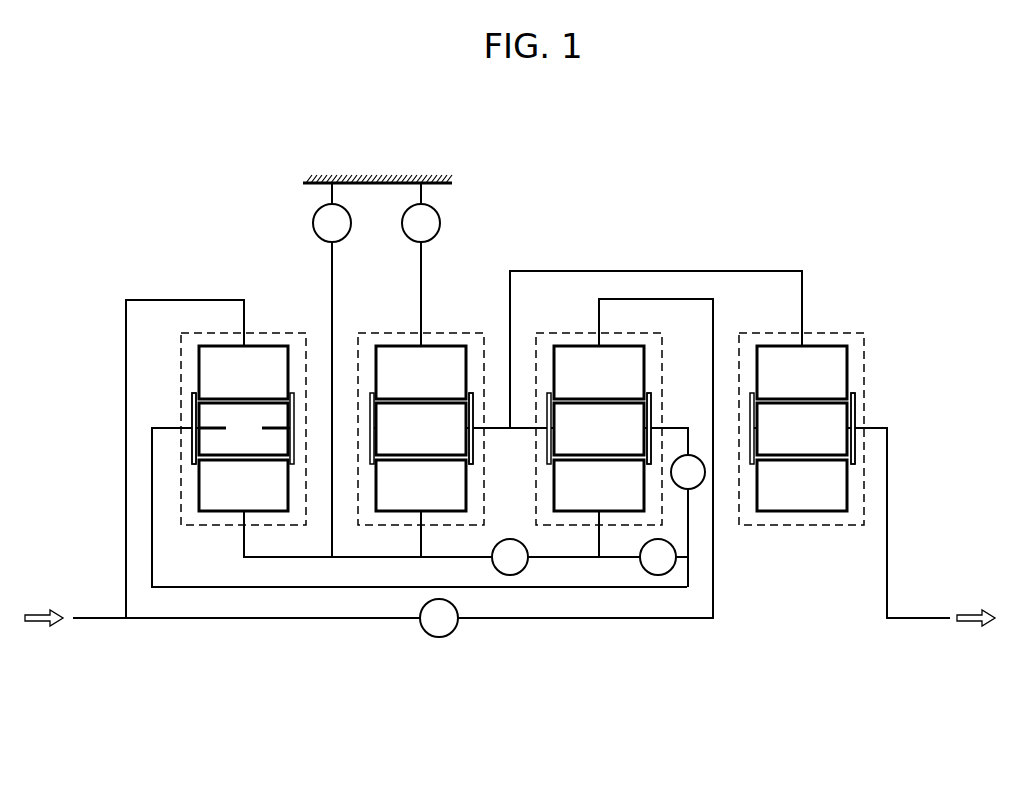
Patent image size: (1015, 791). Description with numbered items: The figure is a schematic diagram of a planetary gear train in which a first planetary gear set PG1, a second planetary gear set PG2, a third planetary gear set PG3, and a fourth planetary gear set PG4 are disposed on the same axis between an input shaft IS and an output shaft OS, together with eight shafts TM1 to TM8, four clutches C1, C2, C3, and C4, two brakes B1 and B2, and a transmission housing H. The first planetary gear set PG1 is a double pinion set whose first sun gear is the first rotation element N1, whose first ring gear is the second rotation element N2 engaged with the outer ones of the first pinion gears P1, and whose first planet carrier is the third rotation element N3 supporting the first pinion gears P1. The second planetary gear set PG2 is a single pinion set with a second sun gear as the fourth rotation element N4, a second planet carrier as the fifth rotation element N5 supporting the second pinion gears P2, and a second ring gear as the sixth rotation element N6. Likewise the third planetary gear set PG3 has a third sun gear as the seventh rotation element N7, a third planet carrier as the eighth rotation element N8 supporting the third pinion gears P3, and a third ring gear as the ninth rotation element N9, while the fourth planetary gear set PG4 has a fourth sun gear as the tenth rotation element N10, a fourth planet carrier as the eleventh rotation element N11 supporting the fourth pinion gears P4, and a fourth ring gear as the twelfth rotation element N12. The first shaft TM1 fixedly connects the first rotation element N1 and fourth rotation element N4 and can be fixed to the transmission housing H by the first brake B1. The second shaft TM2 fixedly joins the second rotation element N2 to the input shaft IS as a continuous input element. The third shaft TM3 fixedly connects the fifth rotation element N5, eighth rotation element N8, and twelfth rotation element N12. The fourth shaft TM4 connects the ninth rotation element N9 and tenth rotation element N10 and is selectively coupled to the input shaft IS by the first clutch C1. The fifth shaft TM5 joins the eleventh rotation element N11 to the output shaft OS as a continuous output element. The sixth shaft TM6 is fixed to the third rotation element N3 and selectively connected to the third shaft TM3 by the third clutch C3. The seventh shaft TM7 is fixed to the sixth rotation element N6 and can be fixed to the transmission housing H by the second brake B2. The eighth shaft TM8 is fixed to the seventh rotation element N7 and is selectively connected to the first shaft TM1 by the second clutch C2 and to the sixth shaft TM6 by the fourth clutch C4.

The transmission housing H is at (388, 175).
The first brake B1 is at (332, 223).
The second brake B2 is at (421, 223).
The first clutch C1 is at (439, 618).
The second clutch C2 is at (510, 557).
The third clutch C3 is at (678, 507).
The fourth clutch C4 is at (658, 557).
The input shaft IS is at (100, 620).
The output shaft OS is at (908, 620).
The first shaft TM1 is at (332, 267).
The second shaft TM2 is at (126, 407).
The third shaft TM3 is at (575, 271).
The fourth shaft TM4 is at (670, 299).
The fifth shaft TM5 is at (888, 485).
The sixth shaft TM6 is at (507, 588).
The seventh shaft TM7 is at (422, 267).
The eighth shaft TM8 is at (620, 558).
The first planetary gear set PG1 is at (210, 533).
The second planetary gear set PG2 is at (383, 533).
The third planetary gear set PG3 is at (565, 533).
The fourth planetary gear set PG4 is at (832, 533).
The first rotation element N1 is at (243, 485).
The second rotation element N2 is at (243, 372).
The third rotation element N3 is at (192, 413).
The fourth rotation element N4 is at (421, 485).
The fifth rotation element N5 is at (474, 445).
The sixth rotation element N6 is at (421, 372).
The seventh rotation element N7 is at (599, 485).
The eighth rotation element N8 is at (652, 409).
The ninth rotation element N9 is at (599, 372).
The tenth rotation element N10 is at (802, 485).
The eleventh rotation element N11 is at (853, 397).
The twelfth rotation element N12 is at (802, 372).
The first pinion gears P1 is at (243, 428).
The second pinion gears P2 is at (421, 428).
The third pinion gears P3 is at (599, 428).
The fourth pinion gears P4 is at (802, 428).